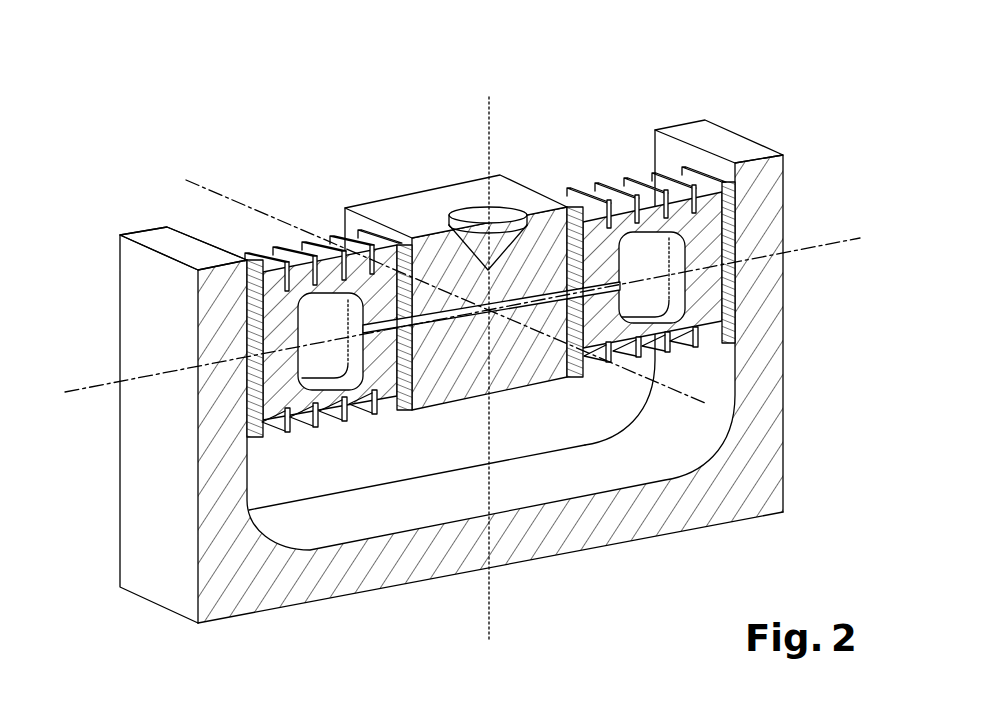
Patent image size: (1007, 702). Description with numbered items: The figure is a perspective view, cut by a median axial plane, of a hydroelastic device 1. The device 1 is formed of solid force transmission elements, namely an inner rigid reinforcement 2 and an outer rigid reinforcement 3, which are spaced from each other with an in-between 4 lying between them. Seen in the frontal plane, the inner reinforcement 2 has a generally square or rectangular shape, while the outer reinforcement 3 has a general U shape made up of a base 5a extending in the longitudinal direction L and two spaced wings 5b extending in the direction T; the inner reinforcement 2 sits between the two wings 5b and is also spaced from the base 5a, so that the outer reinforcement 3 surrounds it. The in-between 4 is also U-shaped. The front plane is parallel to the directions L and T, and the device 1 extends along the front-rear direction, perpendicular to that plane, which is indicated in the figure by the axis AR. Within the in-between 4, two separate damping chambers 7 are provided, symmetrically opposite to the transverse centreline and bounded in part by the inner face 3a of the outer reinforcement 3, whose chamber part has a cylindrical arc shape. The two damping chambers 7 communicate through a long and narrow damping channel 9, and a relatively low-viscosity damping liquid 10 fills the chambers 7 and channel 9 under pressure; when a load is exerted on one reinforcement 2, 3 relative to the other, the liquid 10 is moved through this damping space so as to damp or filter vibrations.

The hydroelastic device 1 is at (456, 336).
The inner rigid reinforcement 2 is at (510, 195).
The outer rigid reinforcement 3 is at (155, 438).
The inner face of the outer reinforcement 3a is at (713, 367).
The in-between 4 is at (600, 410).
The base 5a is at (540, 527).
The wings 5b is at (152, 225).
The damping chambers 7 is at (676, 250).
The damping channel 9 is at (457, 315).
The damping liquid 10 is at (650, 273).
The longitudinal direction L is at (99, 385).
The direction T is at (488, 105).
The rear axis AR is at (213, 188).